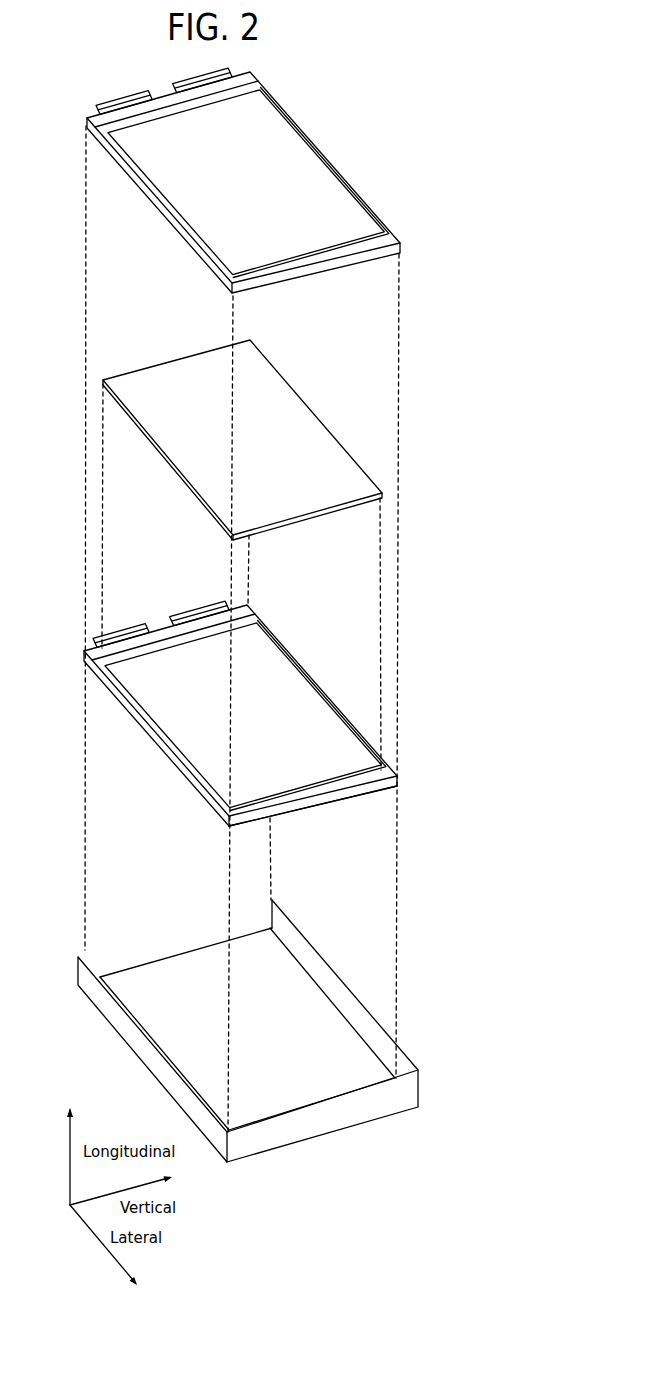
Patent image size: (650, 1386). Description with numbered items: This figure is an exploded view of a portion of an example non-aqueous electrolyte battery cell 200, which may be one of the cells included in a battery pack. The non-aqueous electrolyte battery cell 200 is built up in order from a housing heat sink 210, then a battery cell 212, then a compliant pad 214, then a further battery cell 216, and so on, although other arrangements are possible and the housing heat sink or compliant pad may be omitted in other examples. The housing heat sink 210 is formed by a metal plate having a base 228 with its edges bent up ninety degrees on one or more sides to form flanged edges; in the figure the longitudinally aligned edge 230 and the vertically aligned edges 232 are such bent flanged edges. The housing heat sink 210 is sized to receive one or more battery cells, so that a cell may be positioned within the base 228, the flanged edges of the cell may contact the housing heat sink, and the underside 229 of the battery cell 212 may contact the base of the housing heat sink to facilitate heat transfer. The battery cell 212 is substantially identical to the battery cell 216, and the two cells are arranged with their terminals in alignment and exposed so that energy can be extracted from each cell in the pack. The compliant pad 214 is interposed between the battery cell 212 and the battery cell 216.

The non-aqueous electrolyte battery cell 200 is at (407, 85).
The housing heat sink 210 is at (363, 940).
The battery cell 212 is at (352, 636).
The compliant pad 214 is at (336, 390).
The battery cell 216 is at (345, 127).
The base 228 is at (165, 972).
The underside 229 is at (299, 818).
The front wall 230 is at (320, 1122).
The vertically aligned edges 232 is at (362, 1004).